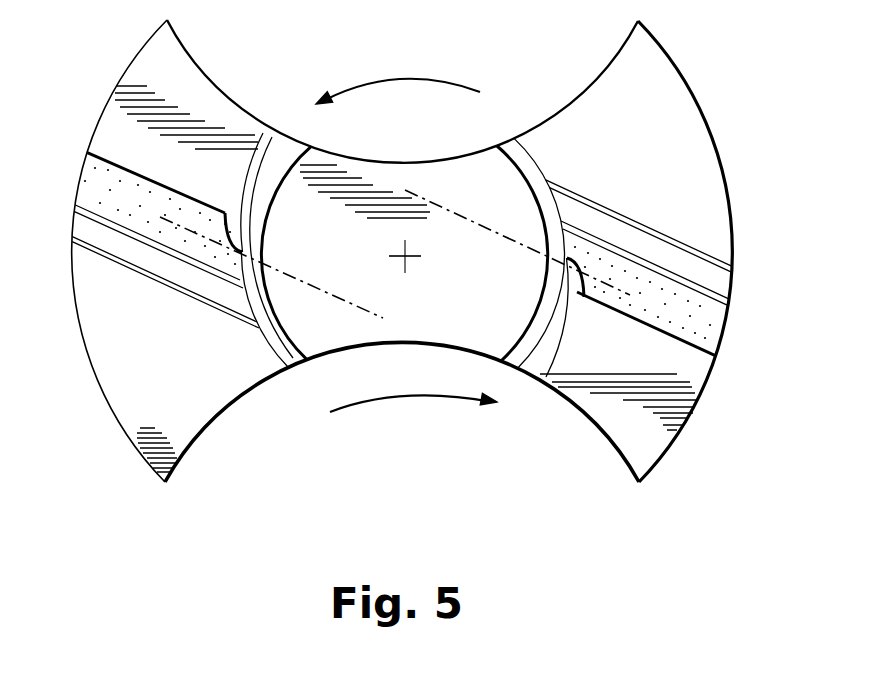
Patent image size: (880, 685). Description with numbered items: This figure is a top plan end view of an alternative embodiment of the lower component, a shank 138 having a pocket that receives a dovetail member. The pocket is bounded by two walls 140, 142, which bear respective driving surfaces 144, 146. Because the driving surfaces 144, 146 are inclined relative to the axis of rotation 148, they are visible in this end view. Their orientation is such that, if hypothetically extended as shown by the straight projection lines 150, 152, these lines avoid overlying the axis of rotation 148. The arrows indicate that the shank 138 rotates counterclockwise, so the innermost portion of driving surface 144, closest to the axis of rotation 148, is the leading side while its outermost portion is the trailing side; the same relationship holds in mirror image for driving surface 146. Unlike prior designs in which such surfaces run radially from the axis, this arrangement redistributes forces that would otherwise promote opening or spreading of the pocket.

The shank 138 is at (345, 47).
The wall 140 is at (130, 446).
The wall 142 is at (716, 138).
The driving surface 144 is at (128, 203).
The driving surface 146 is at (685, 317).
The axis of rotation 148 is at (410, 258).
The projection line 150 is at (303, 287).
The projection line 152 is at (475, 218).